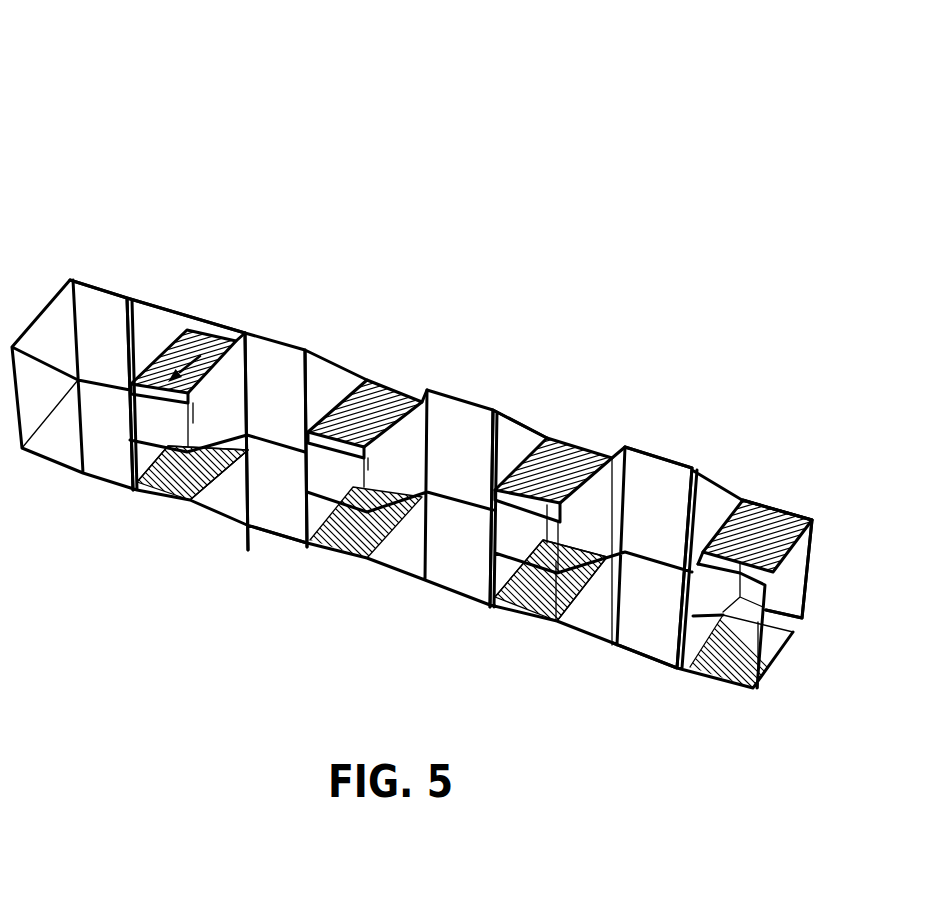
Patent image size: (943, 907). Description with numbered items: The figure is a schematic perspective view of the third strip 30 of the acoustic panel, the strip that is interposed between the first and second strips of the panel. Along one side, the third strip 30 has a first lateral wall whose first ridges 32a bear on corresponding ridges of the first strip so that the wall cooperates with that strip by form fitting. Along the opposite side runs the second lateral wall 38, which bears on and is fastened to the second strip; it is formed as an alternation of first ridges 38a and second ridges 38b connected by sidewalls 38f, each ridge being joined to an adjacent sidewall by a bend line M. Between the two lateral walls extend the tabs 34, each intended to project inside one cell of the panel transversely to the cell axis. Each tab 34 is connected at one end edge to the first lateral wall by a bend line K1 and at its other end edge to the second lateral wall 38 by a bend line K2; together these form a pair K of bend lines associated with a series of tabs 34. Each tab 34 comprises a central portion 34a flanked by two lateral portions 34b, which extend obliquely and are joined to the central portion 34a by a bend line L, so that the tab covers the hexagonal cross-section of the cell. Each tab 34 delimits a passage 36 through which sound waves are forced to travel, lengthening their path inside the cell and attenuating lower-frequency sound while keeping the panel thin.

The third strip 30 is at (89, 97).
The first ridge 32a is at (792, 577).
The tab 34 is at (273, 265).
The central portion 34a is at (198, 358).
The lateral portion 34b is at (152, 328).
The passage 36 is at (236, 339).
The second lateral wall 38 is at (268, 628).
The first ridge 38a is at (160, 483).
The second ridge 38b is at (272, 508).
The sidewall 38f is at (222, 493).
The pair of bend lines K is at (658, 380).
The bend line K1 is at (568, 440).
The bend line K2 is at (592, 455).
The bend line L is at (535, 453).
The bend line M is at (613, 593).